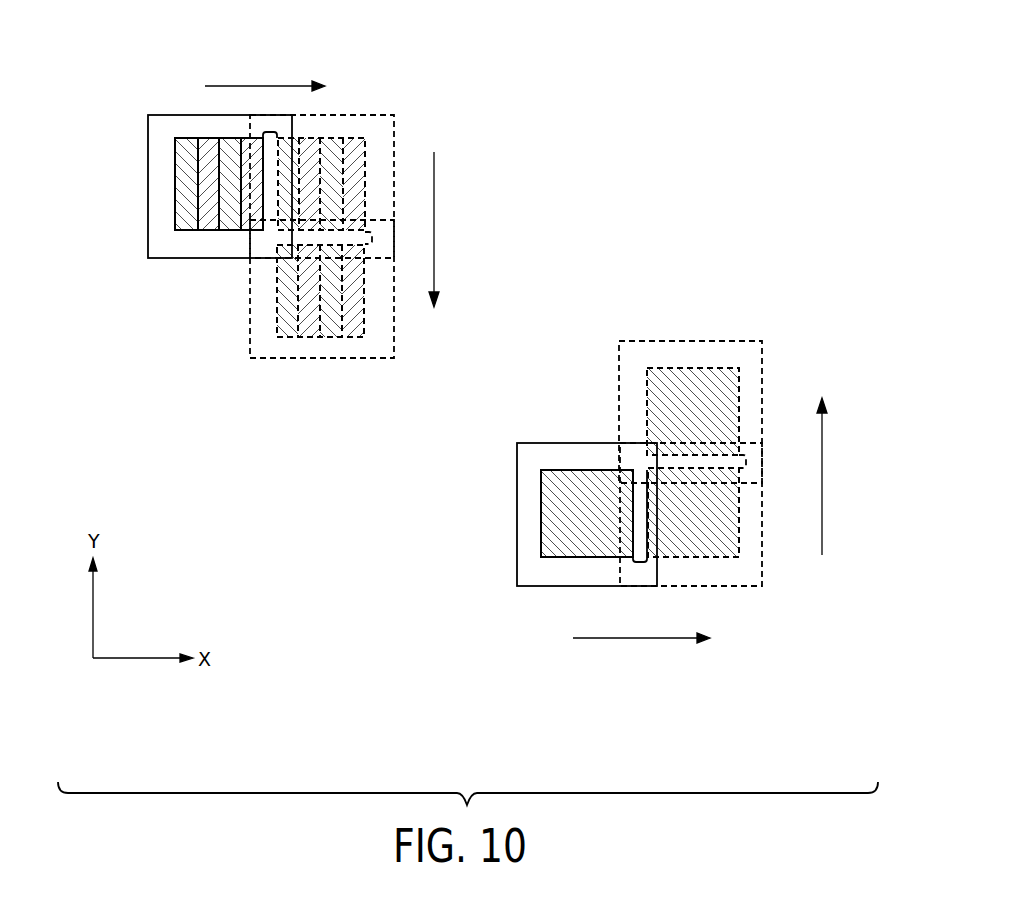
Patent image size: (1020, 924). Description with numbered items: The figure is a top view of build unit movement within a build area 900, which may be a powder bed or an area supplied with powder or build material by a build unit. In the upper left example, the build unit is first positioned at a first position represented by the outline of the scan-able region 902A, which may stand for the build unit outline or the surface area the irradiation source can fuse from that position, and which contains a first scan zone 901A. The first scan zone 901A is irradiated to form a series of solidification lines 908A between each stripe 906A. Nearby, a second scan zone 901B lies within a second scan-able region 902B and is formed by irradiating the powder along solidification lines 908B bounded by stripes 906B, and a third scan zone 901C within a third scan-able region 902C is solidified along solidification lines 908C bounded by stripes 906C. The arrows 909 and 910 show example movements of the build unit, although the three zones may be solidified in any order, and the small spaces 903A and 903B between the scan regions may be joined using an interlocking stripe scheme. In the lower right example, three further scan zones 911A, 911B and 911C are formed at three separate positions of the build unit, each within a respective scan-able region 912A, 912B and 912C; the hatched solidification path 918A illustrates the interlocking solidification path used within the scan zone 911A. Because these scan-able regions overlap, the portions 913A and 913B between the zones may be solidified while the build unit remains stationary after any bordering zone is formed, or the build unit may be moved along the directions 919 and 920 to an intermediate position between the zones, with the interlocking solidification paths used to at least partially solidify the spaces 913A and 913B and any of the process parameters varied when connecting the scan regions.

The build area 900 is at (707, 84).
The first scan zone 901A is at (175, 170).
The second scan zone 901B is at (365, 170).
The third scan zone 901C is at (290, 337).
The scan-able region 902A is at (152, 258).
The second scan-able region 902B is at (394, 120).
The third scan-able region 902C is at (305, 358).
The space between scan regions 903A is at (268, 130).
The space between scan regions 903B is at (372, 238).
The stripe 906A is at (197, 212).
The second gate structure 906B is at (340, 145).
The stripe 906C is at (343, 313).
The solidification lines 908A is at (208, 145).
The solidification lines 908B is at (357, 205).
The third fin region 908C is at (355, 301).
The arrow 909 is at (272, 85).
The arrow 910 is at (436, 273).
The scan zone 911A is at (541, 520).
The scan zone 911B is at (728, 557).
The scan zone 911C is at (740, 378).
The scan-able region 912A is at (567, 443).
The scan-able region 912B is at (762, 568).
The scan-able region 912C is at (696, 341).
The portion between scan regions 913A is at (640, 563).
The portion between scan regions 913B is at (745, 463).
The fin region 918A is at (562, 557).
The direction 919 is at (652, 640).
The direction 920 is at (823, 468).